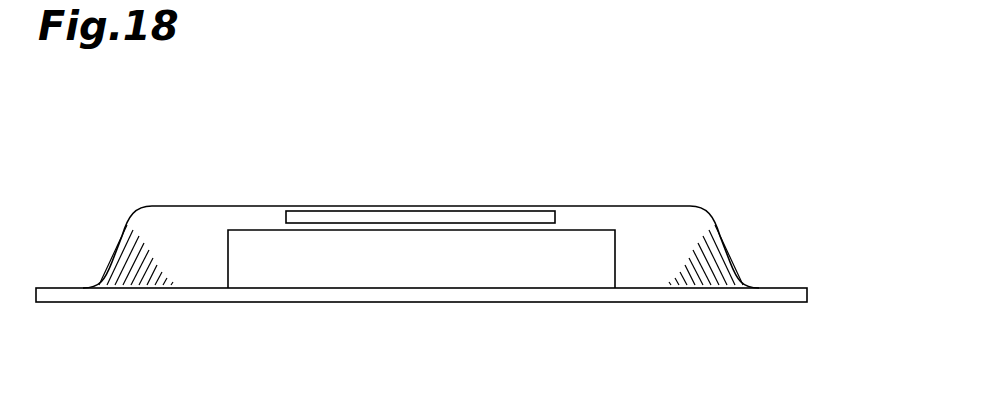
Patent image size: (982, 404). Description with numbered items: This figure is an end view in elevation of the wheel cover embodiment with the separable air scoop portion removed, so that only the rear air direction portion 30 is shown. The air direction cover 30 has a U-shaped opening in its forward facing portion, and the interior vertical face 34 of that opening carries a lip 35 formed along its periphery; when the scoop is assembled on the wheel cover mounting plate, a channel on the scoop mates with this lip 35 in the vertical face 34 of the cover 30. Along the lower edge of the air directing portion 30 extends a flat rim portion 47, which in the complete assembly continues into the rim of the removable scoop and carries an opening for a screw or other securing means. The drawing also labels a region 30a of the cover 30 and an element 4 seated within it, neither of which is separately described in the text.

The rear air direction portion 30 is at (593, 187).
The cover sheet fold region 30a is at (113, 250).
The vertical face 34 is at (247, 217).
The lip 35 is at (462, 210).
The core member 4 is at (430, 275).
The rim portion 47 is at (62, 288).